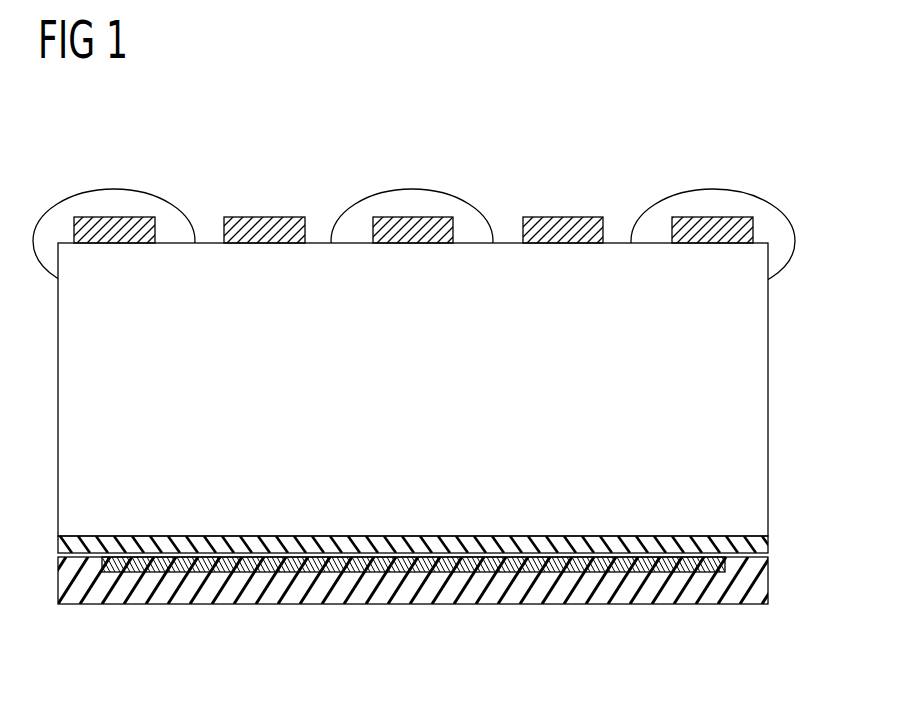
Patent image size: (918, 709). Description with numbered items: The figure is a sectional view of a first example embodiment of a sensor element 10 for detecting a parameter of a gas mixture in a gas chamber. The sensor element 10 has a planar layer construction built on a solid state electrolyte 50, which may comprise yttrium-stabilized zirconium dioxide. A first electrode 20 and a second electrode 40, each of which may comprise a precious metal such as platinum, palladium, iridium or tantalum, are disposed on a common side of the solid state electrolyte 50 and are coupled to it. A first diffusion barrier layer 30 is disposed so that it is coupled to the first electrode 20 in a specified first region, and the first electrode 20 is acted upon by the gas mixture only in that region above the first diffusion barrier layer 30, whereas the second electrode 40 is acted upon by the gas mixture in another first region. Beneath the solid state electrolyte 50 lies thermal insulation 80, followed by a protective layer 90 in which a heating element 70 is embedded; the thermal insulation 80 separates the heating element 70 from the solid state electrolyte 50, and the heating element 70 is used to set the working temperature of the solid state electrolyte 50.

The sensor element 10 is at (680, 153).
The first electrode 20 is at (122, 220).
The first diffusion barrier layer 30 is at (92, 202).
The second electrode 40 is at (265, 228).
The solid state electrolyte 50 is at (760, 372).
The heating element 70 is at (582, 566).
The thermal insulation 80 is at (758, 544).
The protective layer 90 is at (758, 583).